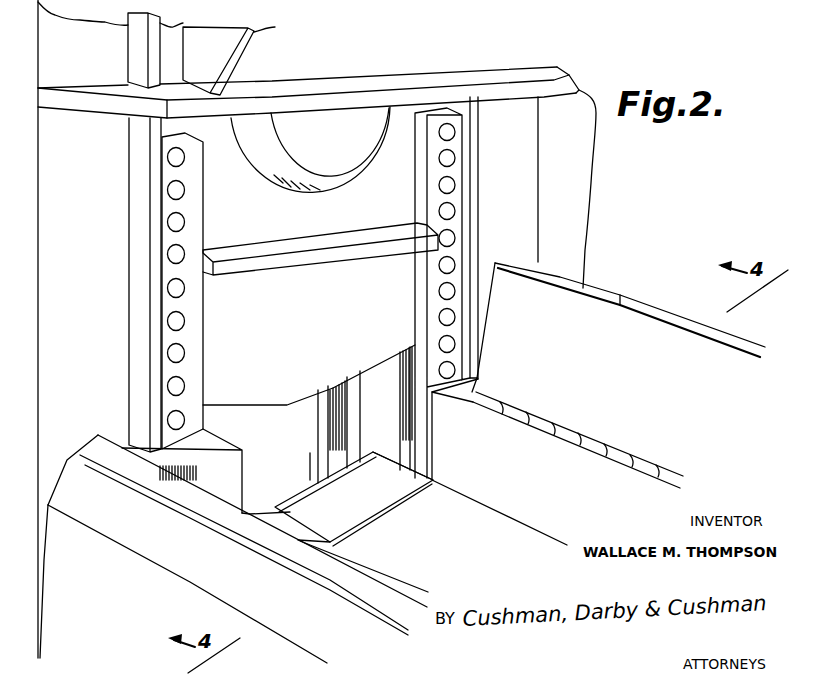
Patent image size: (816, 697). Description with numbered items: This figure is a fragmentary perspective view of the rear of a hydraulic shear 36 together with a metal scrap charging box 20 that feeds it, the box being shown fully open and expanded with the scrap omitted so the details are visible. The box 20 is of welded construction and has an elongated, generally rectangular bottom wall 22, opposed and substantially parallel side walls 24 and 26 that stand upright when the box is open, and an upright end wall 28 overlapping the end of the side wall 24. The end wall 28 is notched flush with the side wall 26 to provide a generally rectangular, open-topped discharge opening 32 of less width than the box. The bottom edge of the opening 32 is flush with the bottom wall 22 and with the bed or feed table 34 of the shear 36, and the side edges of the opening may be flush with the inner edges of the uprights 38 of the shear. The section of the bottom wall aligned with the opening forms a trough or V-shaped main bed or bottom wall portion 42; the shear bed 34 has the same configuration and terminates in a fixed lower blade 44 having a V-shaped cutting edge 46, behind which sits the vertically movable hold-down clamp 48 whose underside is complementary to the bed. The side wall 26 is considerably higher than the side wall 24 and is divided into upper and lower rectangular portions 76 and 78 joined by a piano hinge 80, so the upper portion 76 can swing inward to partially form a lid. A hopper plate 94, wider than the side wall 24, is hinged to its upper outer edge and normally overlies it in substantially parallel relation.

The metal scrap charging box 20 is at (660, 302).
The bottom wall 22 is at (463, 573).
The side wall 24 is at (397, 590).
The side wall 26 is at (692, 345).
The end wall 28 is at (230, 467).
The discharge opening 32 is at (240, 500).
The bed or feed table 34 is at (378, 498).
The hydraulic shear 36 is at (34, 248).
The uprights 38 is at (203, 422).
The main bed or bottom wall portion 42 is at (403, 541).
The fixed lower blade 44 is at (288, 502).
The V-shaped cutting edge 46 is at (312, 455).
The hold-down clamp 48 is at (325, 336).
The upper side wall portion 76 is at (613, 315).
The lower side wall portion 78 is at (557, 513).
The piano hinge 80 is at (567, 440).
The hopper plate 94 is at (82, 588).